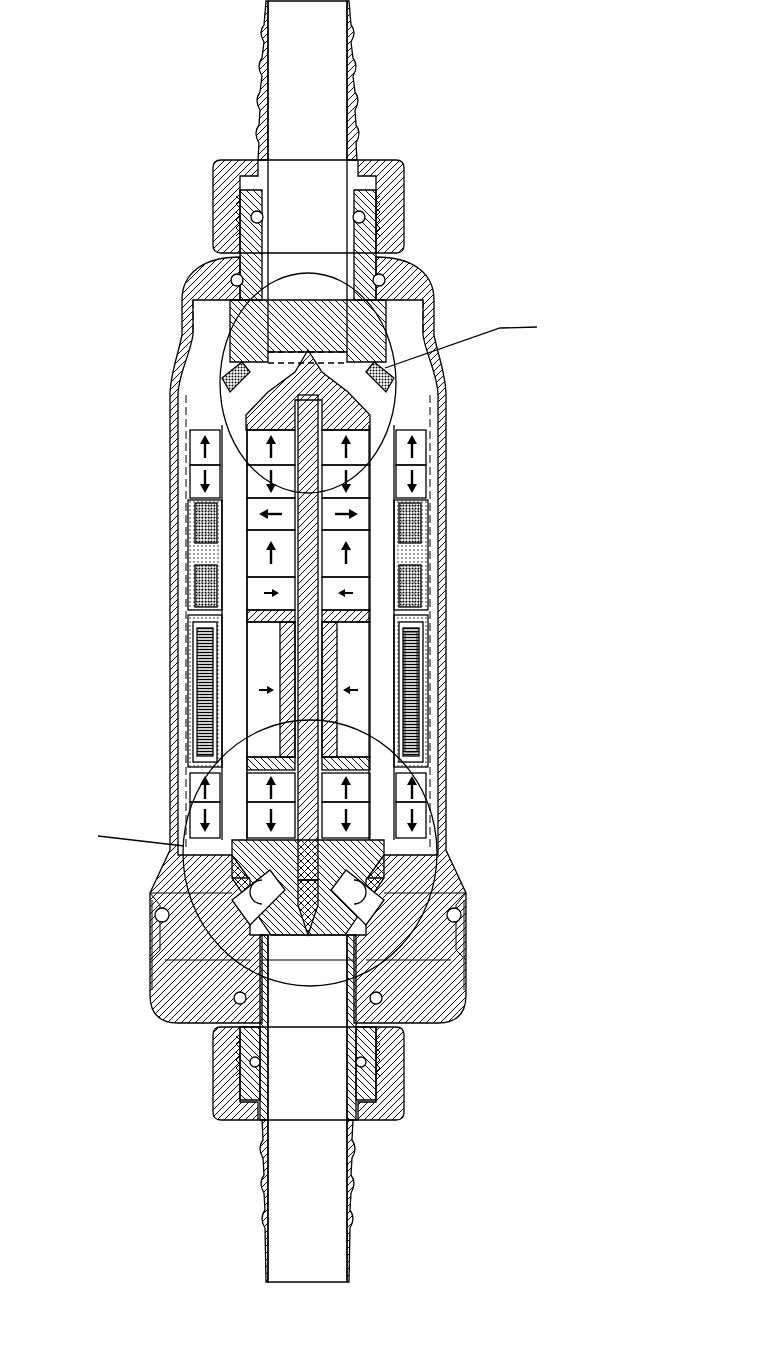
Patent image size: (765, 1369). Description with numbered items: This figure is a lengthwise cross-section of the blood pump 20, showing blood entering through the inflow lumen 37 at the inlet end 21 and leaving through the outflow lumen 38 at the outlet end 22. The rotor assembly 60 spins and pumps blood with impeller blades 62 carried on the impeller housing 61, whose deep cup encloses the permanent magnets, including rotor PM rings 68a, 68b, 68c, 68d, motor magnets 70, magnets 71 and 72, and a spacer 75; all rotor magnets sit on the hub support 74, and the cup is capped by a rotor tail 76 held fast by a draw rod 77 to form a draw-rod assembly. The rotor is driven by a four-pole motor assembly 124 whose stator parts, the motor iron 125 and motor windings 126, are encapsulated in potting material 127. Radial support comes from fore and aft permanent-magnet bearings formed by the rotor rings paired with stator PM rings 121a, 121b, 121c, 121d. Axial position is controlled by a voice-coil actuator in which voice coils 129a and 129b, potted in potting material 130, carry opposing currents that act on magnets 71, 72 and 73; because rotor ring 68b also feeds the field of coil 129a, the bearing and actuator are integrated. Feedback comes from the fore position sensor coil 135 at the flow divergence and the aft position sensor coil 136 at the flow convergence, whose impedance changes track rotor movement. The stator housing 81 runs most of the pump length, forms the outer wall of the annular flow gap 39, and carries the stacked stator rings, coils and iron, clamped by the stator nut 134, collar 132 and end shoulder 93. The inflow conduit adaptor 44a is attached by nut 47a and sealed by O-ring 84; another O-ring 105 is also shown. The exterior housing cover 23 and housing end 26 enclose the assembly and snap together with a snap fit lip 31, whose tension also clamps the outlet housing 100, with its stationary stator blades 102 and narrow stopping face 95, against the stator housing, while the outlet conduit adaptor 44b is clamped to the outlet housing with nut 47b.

The blood pump 20 is at (95, 440).
The first connector half 21 is at (237, 118).
The outlet end 22 is at (375, 1170).
The exterior housing cover 23 is at (447, 883).
The housing end 26 is at (440, 998).
The snap fit lip 31 is at (452, 965).
The inflow lumen 37 is at (328, 148).
The outflow lumen 38 is at (292, 1145).
The annular flow gap 39 is at (232, 695).
The inflow conduit adaptor 44a is at (352, 157).
The outlet conduit adaptor 44b is at (362, 1113).
The nut 47a is at (392, 183).
The nut 47b is at (228, 1062).
The rotor assembly 60 is at (240, 563).
The impeller housing 61 is at (222, 410).
The impeller blades 62 is at (237, 385).
The rotor PM ring 68a is at (255, 460).
The rotor PM ring 68b is at (255, 482).
The rotor PM ring 68c is at (257, 788).
The rotor PM ring 68d is at (257, 810).
The motor magnets 70 is at (258, 667).
The magnet 71 is at (255, 603).
The magnet 72 is at (255, 523).
The magnet 73 is at (258, 553).
The hub support 74 is at (290, 628).
The spacer 75 is at (247, 765).
The rotor tail 76 is at (253, 860).
The draw rod 77 is at (290, 650).
The stator housing 81 is at (372, 322).
The O-ring 84 is at (364, 216).
The end shoulder 93 is at (427, 840).
The stopping face 95 is at (248, 852).
The outlet housing 100 is at (412, 965).
The stator blades 102 is at (258, 900).
The O-ring 105 is at (385, 1000).
The stator PM ring 121a is at (420, 458).
The stator PM ring 121b is at (420, 483).
The stator PM ring 121c is at (422, 788).
The stator PM ring 121d is at (422, 817).
The 4-pole motor assembly 124 is at (417, 718).
The motor iron 125 is at (422, 743).
The motor windings 126 is at (423, 697).
The potting material 127 is at (433, 668).
The voice coil 129a is at (422, 532).
The voice coil 129b is at (425, 598).
The potting material 130 is at (433, 557).
The collar 132 is at (415, 422).
The stator nut 134 is at (407, 322).
The fore position sensor coil 135 is at (377, 375).
The aft position sensor coil 136 is at (253, 897).